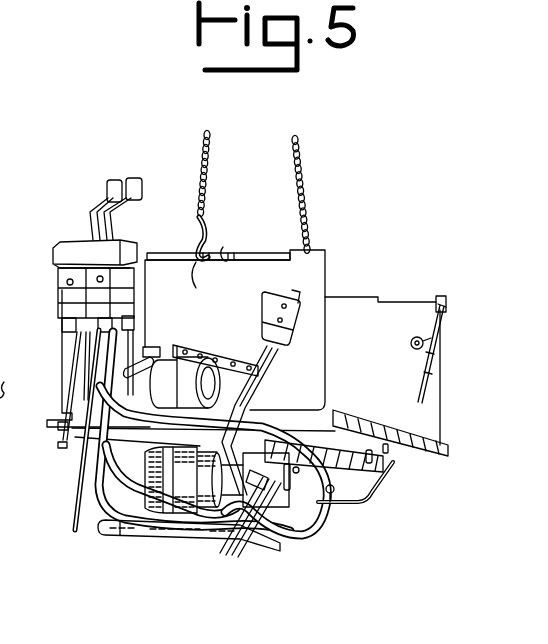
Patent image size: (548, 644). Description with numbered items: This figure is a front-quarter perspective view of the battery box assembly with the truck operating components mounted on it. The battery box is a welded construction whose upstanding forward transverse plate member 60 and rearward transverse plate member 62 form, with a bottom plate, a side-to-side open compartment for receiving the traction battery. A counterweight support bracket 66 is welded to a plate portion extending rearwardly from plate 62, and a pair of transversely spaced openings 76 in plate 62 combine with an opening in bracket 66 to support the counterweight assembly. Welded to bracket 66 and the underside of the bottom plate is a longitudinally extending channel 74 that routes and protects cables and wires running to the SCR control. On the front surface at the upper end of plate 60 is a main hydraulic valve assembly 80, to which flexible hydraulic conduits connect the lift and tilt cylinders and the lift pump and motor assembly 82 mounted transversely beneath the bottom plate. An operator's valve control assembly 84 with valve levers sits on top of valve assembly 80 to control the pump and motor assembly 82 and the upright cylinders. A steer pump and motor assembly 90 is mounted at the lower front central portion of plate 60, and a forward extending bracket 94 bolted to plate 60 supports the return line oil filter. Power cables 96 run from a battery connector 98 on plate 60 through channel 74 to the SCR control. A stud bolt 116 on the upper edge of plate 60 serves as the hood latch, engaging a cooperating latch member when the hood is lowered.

The forward transverse plate member 60 is at (266, 293).
The rearward transverse plate member 62 is at (374, 345).
The counterweight support bracket 66 is at (356, 486).
The longitudinally extending channel 74 is at (357, 467).
The transversely spaced openings 76 is at (416, 337).
The main hydraulic valve assembly 80 is at (73, 304).
The lift pump and motor assembly 82 is at (222, 480).
The operator's valve control assembly 84 is at (77, 249).
The steer pump and motor assembly 90 is at (143, 378).
The forward extending bracket 94 is at (209, 360).
The power cables 96 is at (267, 350).
The battery connector 98 is at (289, 318).
The stud bolt 116 is at (223, 259).